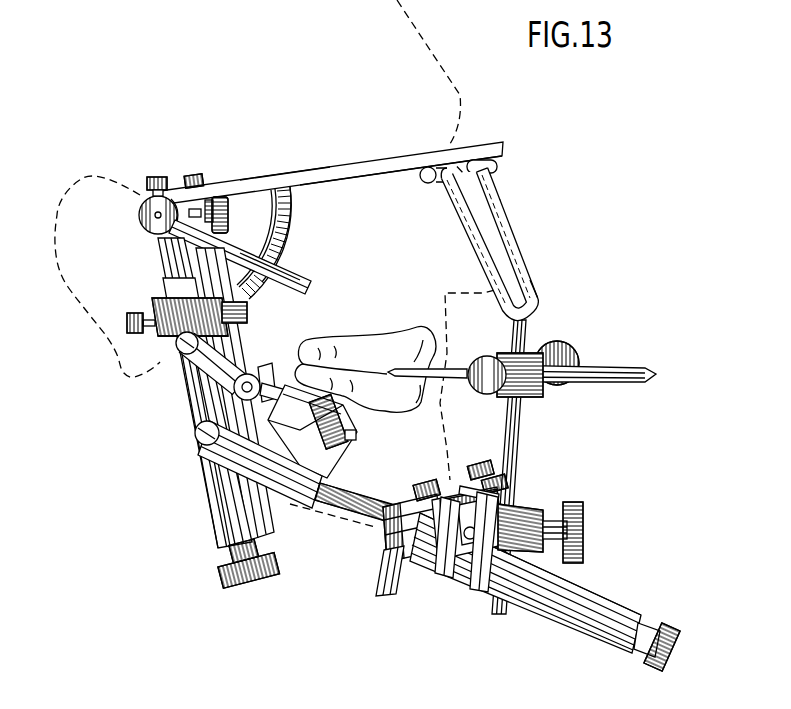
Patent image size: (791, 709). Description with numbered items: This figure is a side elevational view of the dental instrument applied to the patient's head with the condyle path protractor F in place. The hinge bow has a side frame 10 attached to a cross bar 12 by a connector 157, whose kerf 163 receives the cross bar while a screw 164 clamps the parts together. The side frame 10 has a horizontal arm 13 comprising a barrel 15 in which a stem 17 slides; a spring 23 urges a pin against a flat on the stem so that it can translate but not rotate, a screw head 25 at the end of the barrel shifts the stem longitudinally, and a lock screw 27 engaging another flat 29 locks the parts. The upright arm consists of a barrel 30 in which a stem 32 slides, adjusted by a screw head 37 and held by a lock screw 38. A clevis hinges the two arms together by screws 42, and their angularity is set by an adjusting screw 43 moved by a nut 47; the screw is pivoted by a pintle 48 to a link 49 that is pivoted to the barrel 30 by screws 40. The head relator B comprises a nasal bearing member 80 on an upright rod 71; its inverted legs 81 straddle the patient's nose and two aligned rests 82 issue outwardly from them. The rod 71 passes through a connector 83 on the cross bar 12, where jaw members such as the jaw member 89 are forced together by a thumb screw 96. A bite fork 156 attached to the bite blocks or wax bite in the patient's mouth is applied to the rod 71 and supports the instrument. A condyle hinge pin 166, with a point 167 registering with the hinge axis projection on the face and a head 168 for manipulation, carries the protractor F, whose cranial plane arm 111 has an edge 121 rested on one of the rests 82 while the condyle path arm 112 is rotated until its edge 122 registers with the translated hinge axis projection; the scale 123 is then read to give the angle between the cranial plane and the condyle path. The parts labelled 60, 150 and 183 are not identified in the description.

The side frame 10 is at (597, 623).
The cross bar 12 is at (453, 507).
The horizontal arm 13 is at (360, 512).
The barrel 15 is at (547, 600).
The stem 17 is at (333, 487).
The spring 23 is at (387, 594).
The screw head 25 is at (668, 654).
The lock screw 27 is at (418, 480).
The flat 29 is at (409, 518).
The barrel 30 is at (213, 487).
The stem 32 is at (168, 287).
The screw head 37 is at (242, 582).
The lock screw 38 is at (137, 328).
The screws 40 is at (173, 352).
The screws 42 is at (193, 432).
The adjusting screw 43 is at (273, 397).
The nut 47 is at (343, 417).
The pintle 48 is at (250, 380).
The link 49 is at (217, 368).
The locking knob 60 is at (157, 177).
The upright or rod 71 is at (520, 435).
The nasal bearing member 80 is at (530, 305).
The inverted legs 81 is at (512, 253).
The rests 82 is at (439, 183).
The connector 83 is at (533, 507).
The jaw member 89 is at (487, 387).
The thumb screw 96 is at (583, 525).
The cranial plane arm 111 is at (383, 160).
The condyle path arm 112 is at (307, 288).
The edge 121 is at (389, 173).
The edge 122 is at (296, 266).
The scale 123 is at (288, 205).
The graduated sector 150 is at (288, 237).
The bite fork 156 is at (420, 345).
The connector 157 is at (472, 590).
The kerf 163 is at (450, 576).
The screw 164 is at (492, 470).
The condyle hinge pin 166 is at (228, 213).
The point 167 is at (191, 209).
The head 168 is at (222, 197).
The pointer shaft 183 is at (533, 383).
The head relator B is at (540, 283).
The condyle path protractor F is at (262, 176).